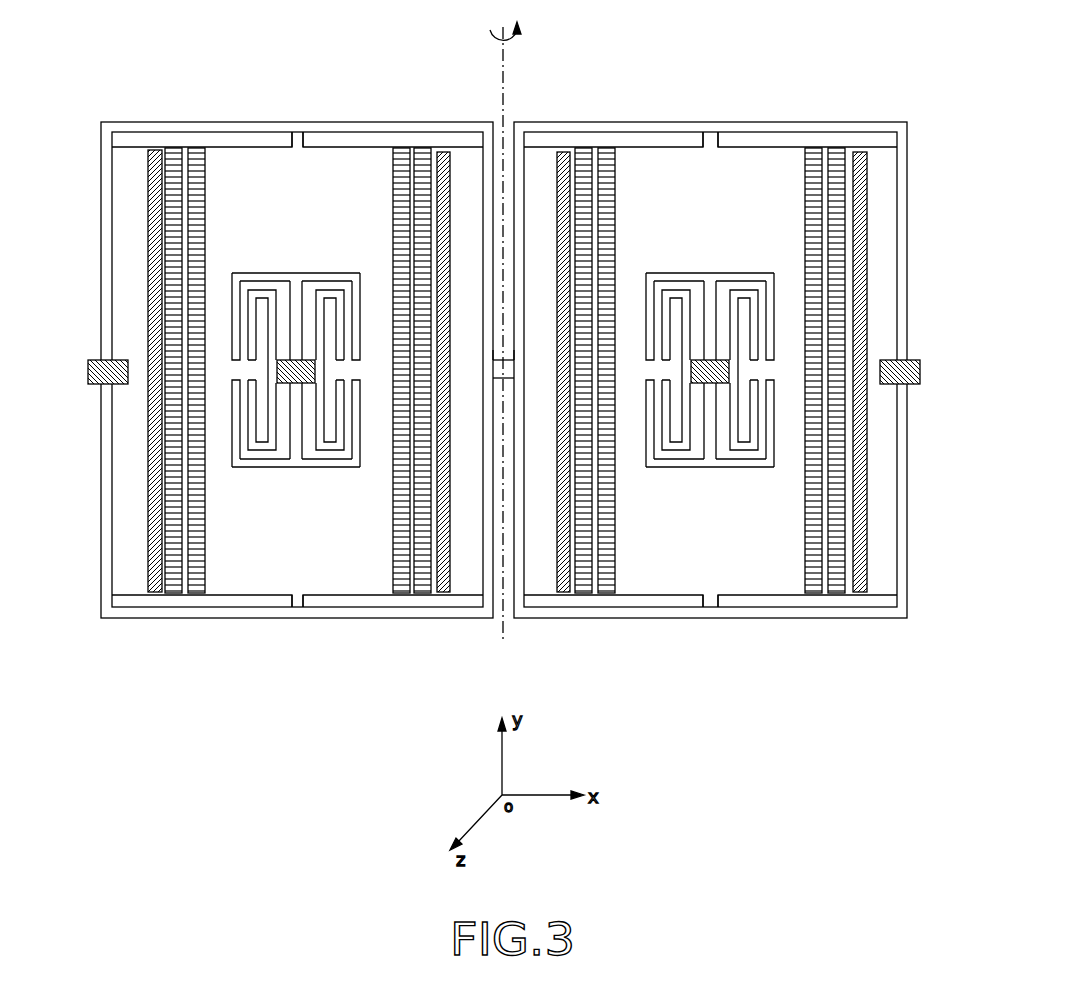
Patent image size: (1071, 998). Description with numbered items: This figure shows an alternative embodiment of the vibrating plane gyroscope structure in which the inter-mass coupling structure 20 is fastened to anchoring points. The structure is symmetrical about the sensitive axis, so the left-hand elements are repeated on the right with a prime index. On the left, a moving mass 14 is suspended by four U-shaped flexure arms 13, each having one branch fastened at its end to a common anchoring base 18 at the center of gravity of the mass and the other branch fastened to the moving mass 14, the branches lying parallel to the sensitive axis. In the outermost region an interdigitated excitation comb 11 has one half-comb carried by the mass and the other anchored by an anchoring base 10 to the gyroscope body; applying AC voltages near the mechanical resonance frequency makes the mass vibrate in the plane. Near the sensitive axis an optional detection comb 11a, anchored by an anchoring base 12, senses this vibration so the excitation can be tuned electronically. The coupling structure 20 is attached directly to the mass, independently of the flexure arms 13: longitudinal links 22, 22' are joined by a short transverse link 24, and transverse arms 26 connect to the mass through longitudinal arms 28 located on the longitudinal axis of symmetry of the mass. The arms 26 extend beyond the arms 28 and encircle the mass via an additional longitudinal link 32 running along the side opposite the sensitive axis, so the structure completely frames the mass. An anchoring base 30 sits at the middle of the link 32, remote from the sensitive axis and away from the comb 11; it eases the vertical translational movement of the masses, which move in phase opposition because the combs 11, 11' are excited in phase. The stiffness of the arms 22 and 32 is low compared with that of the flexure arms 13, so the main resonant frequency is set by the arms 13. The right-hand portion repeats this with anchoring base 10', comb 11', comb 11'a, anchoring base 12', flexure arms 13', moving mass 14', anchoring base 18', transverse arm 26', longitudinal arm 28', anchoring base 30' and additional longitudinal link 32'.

The anchoring base 10 is at (137, 340).
The interdigitated comb 11 is at (185, 340).
The interdigitated comb 11a is at (420, 150).
The anchoring base 12 is at (452, 338).
The flexure arm 13 is at (296, 373).
The moving mass 14 is at (297, 395).
The anchoring base 18 is at (329, 360).
The coupling structure 20 is at (485, 645).
The longitudinal link 22 is at (483, 315).
The longitudinal link 22' is at (523, 300).
The transverse link 24 is at (507, 373).
The transverse arm 26 is at (297, 372).
The longitudinal arm 28 is at (305, 346).
The anchoring base 30 is at (95, 392).
The additional longitudinal link 32 is at (278, 370).
The anchoring base 10' is at (877, 338).
The interdigitated comb 11' is at (825, 339).
The interdigitated comb 11'a is at (617, 339).
The anchoring base 12' is at (578, 338).
The flexure arm 13' is at (710, 373).
The moving mass 14' is at (710, 395).
The anchoring base 18' is at (745, 360).
The transverse arm 26' is at (710, 396).
The longitudinal arm 28' is at (729, 369).
The anchoring base 30' is at (916, 392).
The additional longitudinal link 32' is at (733, 370).